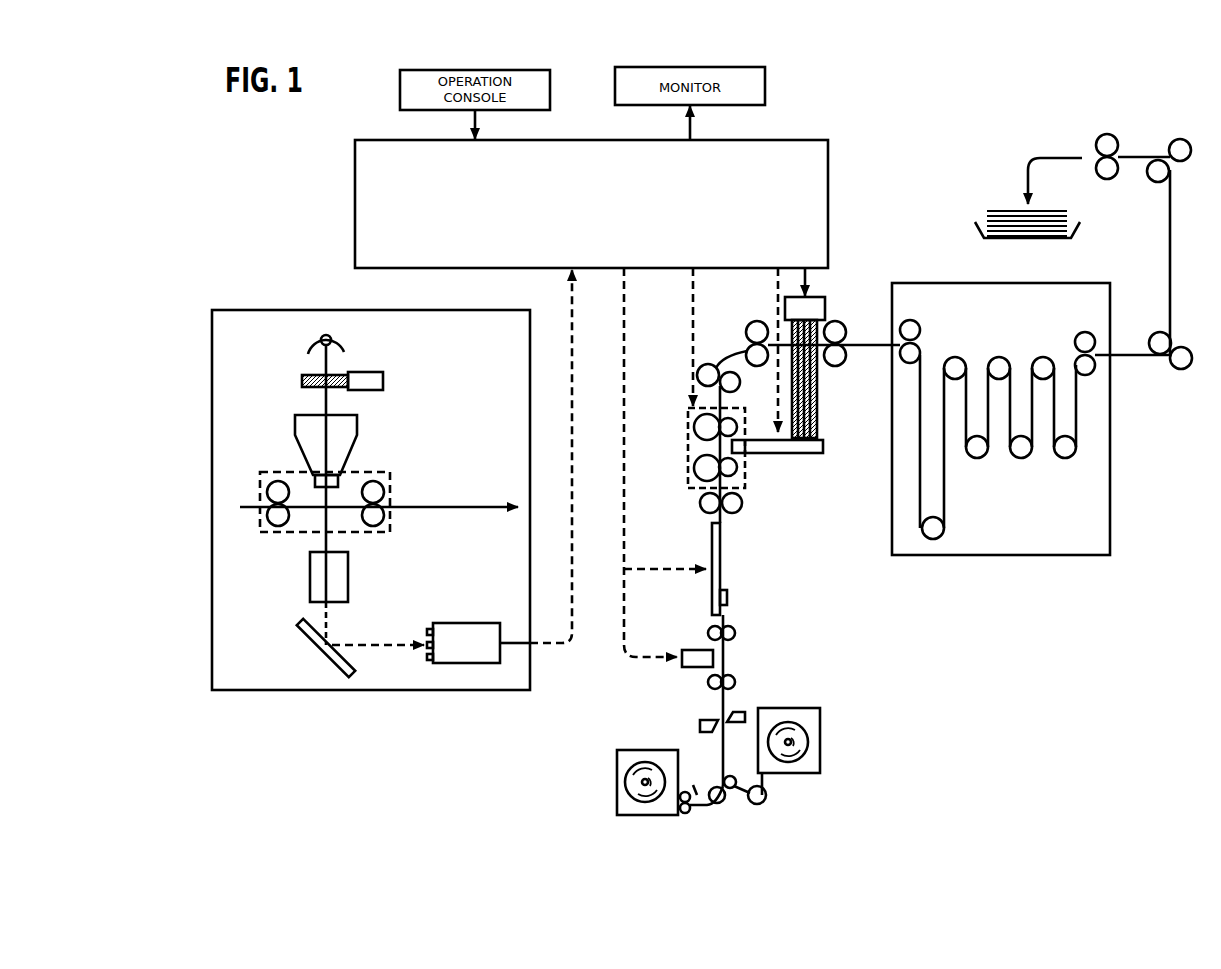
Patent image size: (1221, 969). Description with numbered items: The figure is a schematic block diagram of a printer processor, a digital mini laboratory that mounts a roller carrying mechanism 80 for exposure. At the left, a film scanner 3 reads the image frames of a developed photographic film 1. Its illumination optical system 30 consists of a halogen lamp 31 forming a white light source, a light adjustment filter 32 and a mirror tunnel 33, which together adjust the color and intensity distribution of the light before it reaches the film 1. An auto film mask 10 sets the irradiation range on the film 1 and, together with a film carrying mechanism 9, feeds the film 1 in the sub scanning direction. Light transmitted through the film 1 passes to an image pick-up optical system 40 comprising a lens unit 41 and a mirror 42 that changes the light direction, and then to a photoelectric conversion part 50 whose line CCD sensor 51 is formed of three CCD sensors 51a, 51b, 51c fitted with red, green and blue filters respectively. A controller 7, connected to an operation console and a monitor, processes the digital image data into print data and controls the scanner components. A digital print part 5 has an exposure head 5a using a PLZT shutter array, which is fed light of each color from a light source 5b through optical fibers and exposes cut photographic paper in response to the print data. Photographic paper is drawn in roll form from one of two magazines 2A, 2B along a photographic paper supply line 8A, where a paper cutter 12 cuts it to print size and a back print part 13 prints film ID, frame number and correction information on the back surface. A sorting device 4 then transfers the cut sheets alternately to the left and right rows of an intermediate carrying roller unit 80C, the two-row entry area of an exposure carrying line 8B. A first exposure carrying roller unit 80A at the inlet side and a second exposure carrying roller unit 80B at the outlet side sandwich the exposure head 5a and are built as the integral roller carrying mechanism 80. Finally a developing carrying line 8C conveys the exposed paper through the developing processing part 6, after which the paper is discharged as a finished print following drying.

The photographic film 1 is at (478, 500).
The photographic paper magazine 2A is at (618, 772).
The photographic paper magazine 2B is at (822, 745).
The film scanner 3 is at (240, 310).
The sorting device 4 is at (725, 567).
The digital print part 5 is at (819, 348).
The exposure head 5a is at (823, 447).
The light source 5b is at (825, 300).
The developing processing part 6 is at (945, 282).
The controller 7 is at (355, 158).
The photographic paper supply line 8A is at (720, 761).
The exposure carrying line 8B is at (754, 476).
The developing carrying line 8C is at (1015, 478).
The film carrying mechanism 9 is at (268, 532).
The auto film mask 10 is at (276, 529).
The paper cutter 12 is at (698, 719).
The back print part 13 is at (693, 652).
The illumination optical system 30 is at (349, 486).
The halogen lamp 31 is at (346, 340).
The light adjustment filter 32 is at (383, 375).
The mirror tunnel 33 is at (292, 420).
The image pick-up optical system 40 is at (385, 504).
The lens unit 41 is at (310, 590).
The mirror 42 is at (325, 655).
The photoelectric conversion part 50 is at (467, 623).
The line CCD sensor 51 is at (422, 635).
The CCD sensor 51a is at (431, 629).
The CCD sensor 51b is at (427, 645).
The CCD sensor 51c is at (430, 660).
The roller carrying mechanism 80 is at (734, 476).
The first exposure carrying roller unit 80A is at (690, 472).
The second exposure carrying roller unit 80B is at (690, 428).
The intermediate carrying roller unit 80C is at (695, 506).